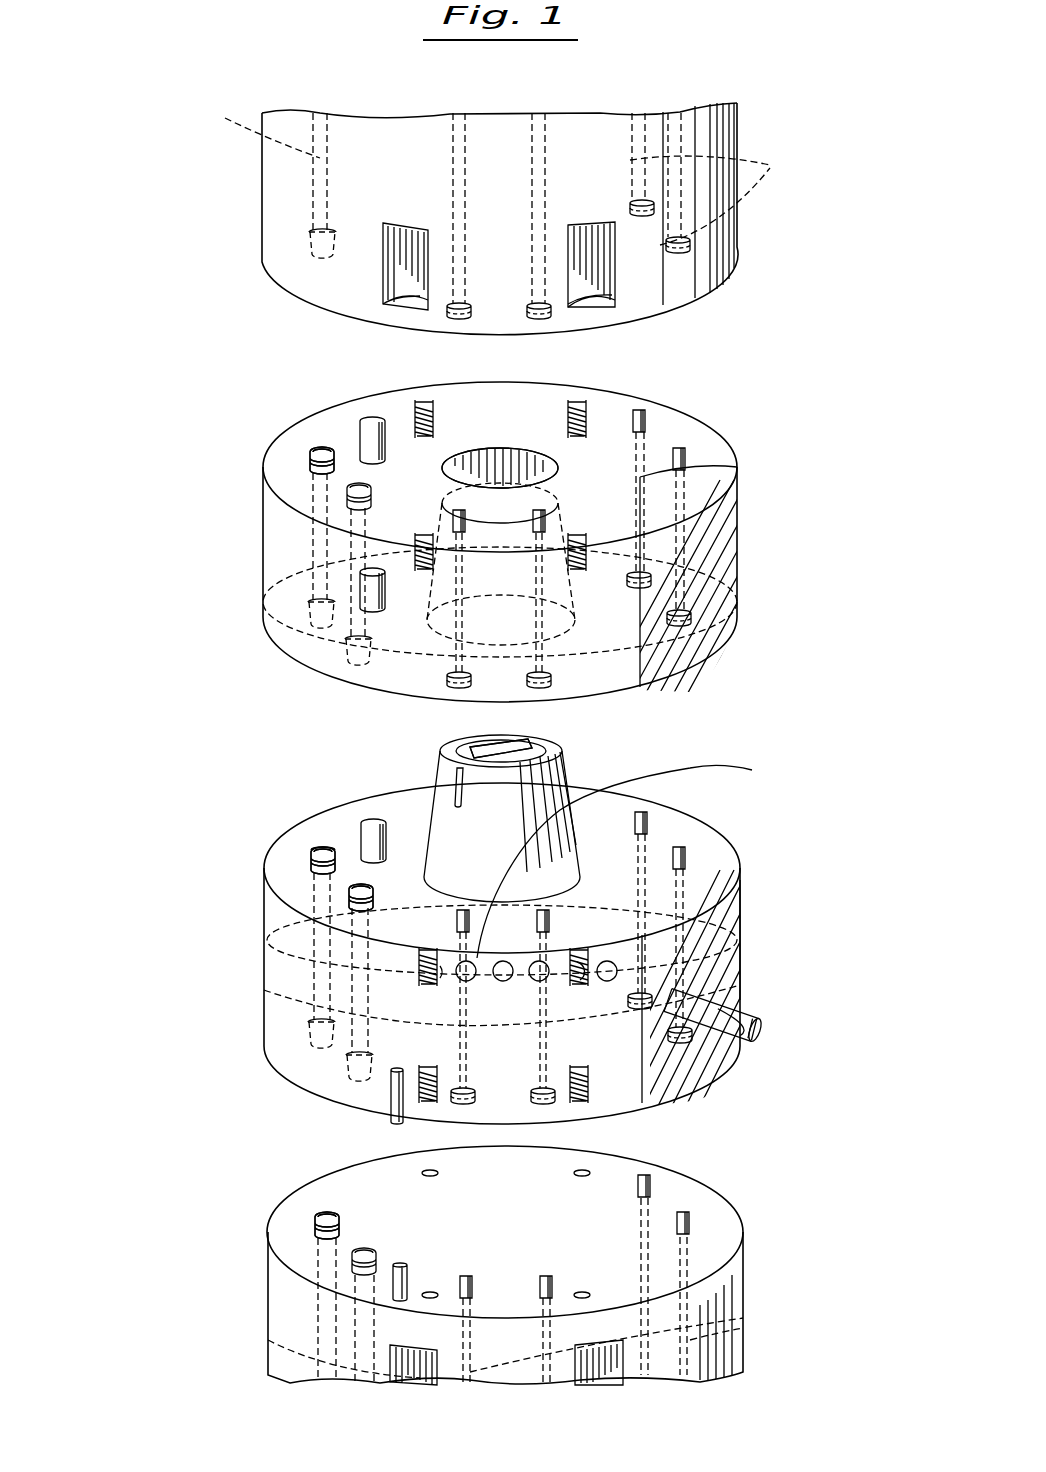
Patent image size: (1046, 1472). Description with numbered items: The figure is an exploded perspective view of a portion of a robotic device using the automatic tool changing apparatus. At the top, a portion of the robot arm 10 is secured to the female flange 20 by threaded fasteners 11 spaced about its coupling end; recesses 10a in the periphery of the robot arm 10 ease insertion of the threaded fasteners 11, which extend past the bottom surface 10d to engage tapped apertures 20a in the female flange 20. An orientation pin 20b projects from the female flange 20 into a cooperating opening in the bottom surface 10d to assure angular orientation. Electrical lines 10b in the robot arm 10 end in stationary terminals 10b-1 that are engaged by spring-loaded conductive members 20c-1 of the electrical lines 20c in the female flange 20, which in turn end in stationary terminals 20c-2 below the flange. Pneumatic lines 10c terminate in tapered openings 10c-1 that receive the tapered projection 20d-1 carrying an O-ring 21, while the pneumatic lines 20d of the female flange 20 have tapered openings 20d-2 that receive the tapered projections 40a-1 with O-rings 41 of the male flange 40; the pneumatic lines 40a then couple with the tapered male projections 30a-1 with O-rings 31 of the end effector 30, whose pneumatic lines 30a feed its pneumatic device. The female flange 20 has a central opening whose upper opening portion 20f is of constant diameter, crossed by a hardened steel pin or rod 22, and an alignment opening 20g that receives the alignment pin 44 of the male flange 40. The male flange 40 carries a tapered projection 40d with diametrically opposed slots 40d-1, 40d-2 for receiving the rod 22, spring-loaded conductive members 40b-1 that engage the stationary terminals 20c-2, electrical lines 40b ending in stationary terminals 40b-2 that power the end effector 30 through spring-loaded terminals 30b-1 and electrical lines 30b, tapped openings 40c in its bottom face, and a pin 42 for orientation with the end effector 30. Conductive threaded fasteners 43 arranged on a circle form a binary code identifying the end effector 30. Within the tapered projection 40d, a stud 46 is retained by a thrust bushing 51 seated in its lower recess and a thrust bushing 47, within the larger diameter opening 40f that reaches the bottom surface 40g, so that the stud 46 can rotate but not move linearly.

The robot arm 10 is at (243, 182).
The recesses 10a is at (408, 228).
The electrical lines 10b is at (723, 179).
The stationary terminals 10b-1 is at (690, 250).
The pneumatic lines 10c is at (366, 210).
The tapered openings 10c-1 is at (318, 246).
The bottom surface 10d is at (722, 278).
The threaded fasteners 11 is at (405, 300).
The female flange 20 is at (243, 548).
The tapped apertures 20a is at (424, 398).
The orientation pin 20b is at (366, 420).
The electrical lines 20c is at (686, 540).
The spring-loaded conductive members 20c-1 is at (686, 452).
The stationary terminals 20c-2 is at (692, 614).
The pneumatic lines 20d is at (315, 562).
The tapered projection 20d-1 is at (312, 450).
The tapered openings 20d-2 is at (332, 656).
The upper opening portion 20f is at (496, 450).
The alignment opening 20g is at (382, 612).
The O-ring 21 is at (348, 494).
The pin or rod 22 is at (499, 520).
The end effector 30 is at (250, 1236).
The pneumatic lines 30a is at (330, 1374).
The tapered male projections 30a-1 is at (316, 1215).
The electrical lines 30b is at (472, 1345).
The spring-loaded terminals 30b-1 is at (472, 1278).
The O-rings 31 is at (352, 1264).
The male flange 40 is at (248, 893).
The pneumatic lines 40a is at (340, 985).
The tapered projections 40a-1 is at (350, 890).
The electrical lines 40b is at (690, 905).
The spring-loaded conductive members 40b-1 is at (686, 850).
The stationary terminals 40b-2 is at (694, 1036).
The tapped openings 40c is at (428, 948).
The tapered projection 40d is at (558, 766).
The slot 40d-1 is at (456, 798).
The slot 40d-2 is at (530, 743).
The larger diameter opening 40f is at (322, 848).
The bottom surface 40g is at (742, 912).
The O-rings 41 is at (355, 916).
The pin 42 is at (390, 1125).
The threaded fasteners 43 is at (440, 978).
The alignment pin 44 is at (362, 824).
The stud 46 is at (485, 746).
The thrust bushing 47 is at (748, 1012).
The thrust bushing 51 is at (396, 1262).